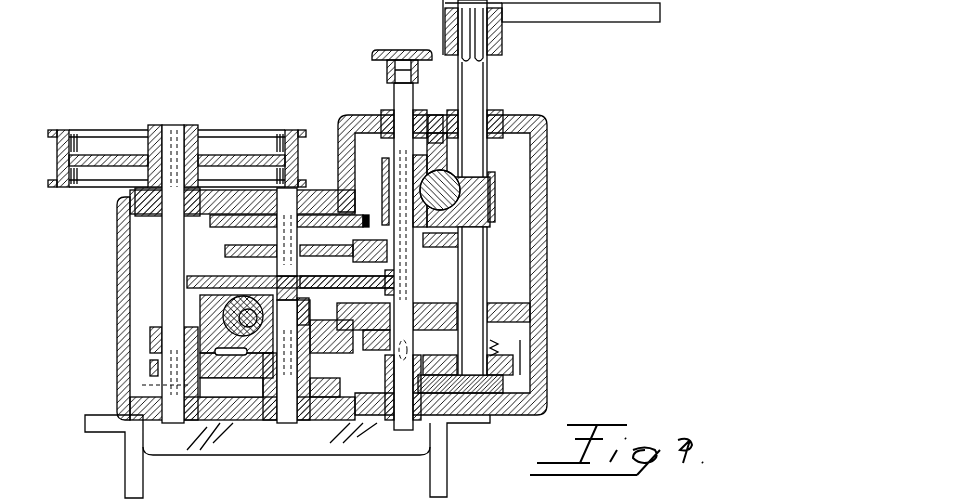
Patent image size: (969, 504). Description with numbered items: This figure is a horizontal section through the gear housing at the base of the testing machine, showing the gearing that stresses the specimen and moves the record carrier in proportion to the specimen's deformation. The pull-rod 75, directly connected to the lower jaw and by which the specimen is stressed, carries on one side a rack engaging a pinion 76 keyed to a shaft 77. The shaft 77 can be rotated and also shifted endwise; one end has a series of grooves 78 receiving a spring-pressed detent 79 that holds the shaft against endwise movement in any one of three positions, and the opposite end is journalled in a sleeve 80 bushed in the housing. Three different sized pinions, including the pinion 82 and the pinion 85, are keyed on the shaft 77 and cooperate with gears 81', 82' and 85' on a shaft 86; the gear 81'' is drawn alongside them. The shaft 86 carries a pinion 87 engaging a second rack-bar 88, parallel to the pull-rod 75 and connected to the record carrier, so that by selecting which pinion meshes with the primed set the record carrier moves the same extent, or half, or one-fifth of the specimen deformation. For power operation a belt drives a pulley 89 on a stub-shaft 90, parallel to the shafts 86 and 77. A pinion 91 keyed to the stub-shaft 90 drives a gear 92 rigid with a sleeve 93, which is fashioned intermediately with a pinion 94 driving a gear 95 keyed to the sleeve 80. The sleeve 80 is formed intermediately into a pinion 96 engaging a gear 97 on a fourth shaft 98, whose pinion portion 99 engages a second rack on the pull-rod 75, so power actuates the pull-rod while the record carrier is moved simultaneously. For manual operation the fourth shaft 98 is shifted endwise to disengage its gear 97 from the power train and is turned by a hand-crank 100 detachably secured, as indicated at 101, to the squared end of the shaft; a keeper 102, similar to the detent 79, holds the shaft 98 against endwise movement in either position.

The pull-rod 75 is at (480, 172).
The pinion 76 is at (389, 178).
The shaft 77 is at (413, 294).
The grooves 78 is at (393, 108).
The spring-pressed detent 79 is at (413, 108).
The sleeve 80 is at (402, 420).
The gear 81' is at (356, 257).
The lever arm 81'' is at (326, 242).
The pinion 82 is at (367, 220).
The gear 82' is at (334, 206).
The pinion 85 is at (292, 276).
The gear 85' is at (348, 290).
The shaft 86 is at (275, 234).
The pinion 87 is at (309, 310).
The rack-bar 88 is at (228, 312).
The pulley 89 is at (48, 143).
The stub-shaft 90 is at (172, 233).
The pinion 91 is at (148, 366).
The gear 92 is at (238, 368).
The sleeve 93 is at (288, 415).
The pinion 94 is at (247, 420).
The gear 95 is at (333, 420).
The pinion 96 is at (423, 355).
The gear 97 is at (522, 360).
The fourth shaft 98 is at (470, 293).
The pinion portion 99 is at (495, 208).
The hand-crank 100 is at (593, 18).
The detachable securing means 101 is at (443, 15).
The keeper 102 is at (490, 105).